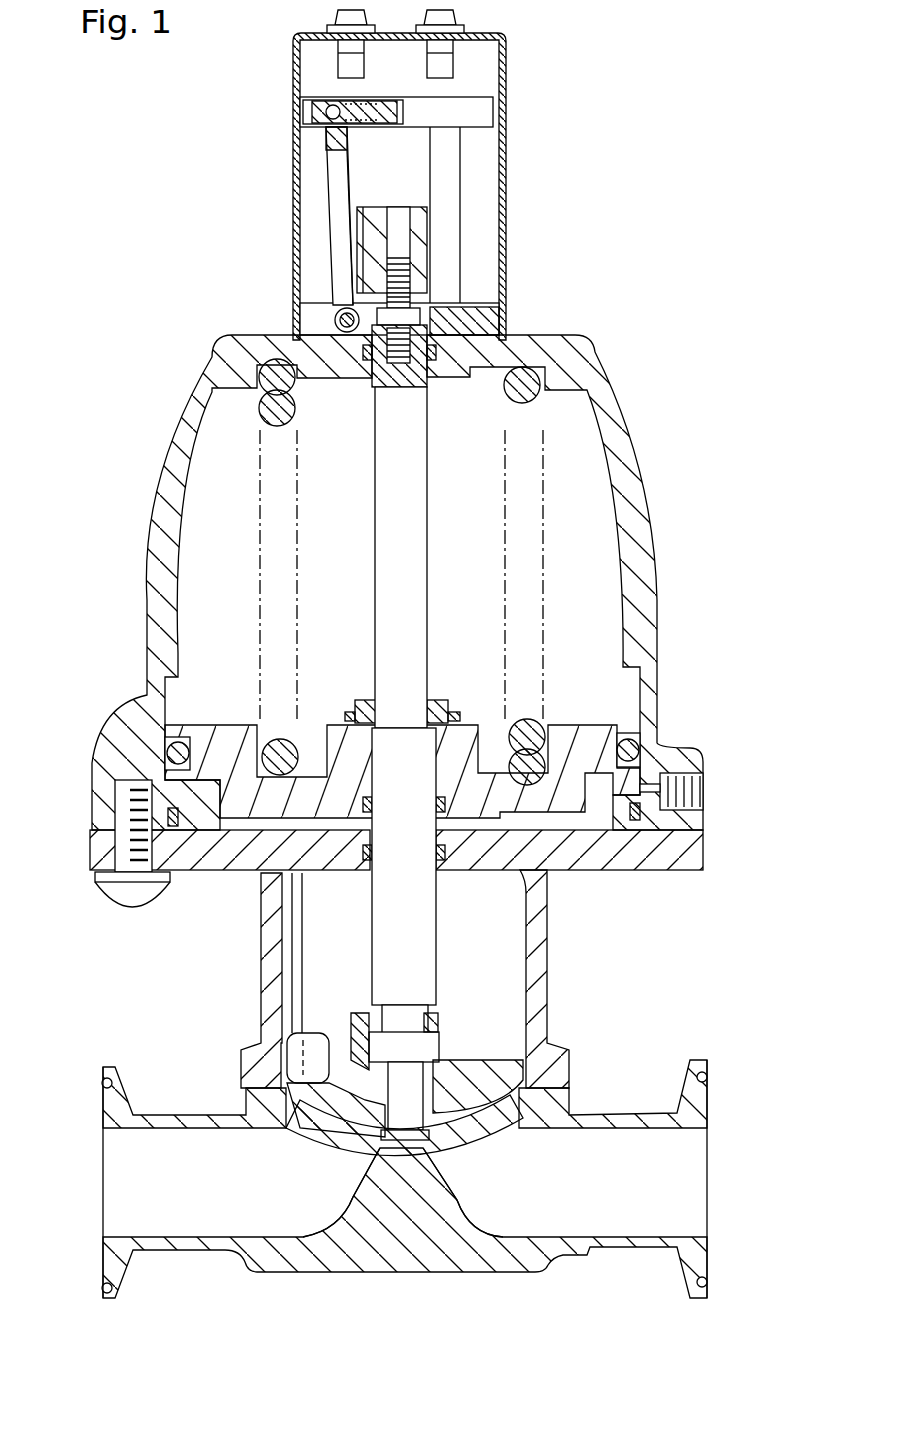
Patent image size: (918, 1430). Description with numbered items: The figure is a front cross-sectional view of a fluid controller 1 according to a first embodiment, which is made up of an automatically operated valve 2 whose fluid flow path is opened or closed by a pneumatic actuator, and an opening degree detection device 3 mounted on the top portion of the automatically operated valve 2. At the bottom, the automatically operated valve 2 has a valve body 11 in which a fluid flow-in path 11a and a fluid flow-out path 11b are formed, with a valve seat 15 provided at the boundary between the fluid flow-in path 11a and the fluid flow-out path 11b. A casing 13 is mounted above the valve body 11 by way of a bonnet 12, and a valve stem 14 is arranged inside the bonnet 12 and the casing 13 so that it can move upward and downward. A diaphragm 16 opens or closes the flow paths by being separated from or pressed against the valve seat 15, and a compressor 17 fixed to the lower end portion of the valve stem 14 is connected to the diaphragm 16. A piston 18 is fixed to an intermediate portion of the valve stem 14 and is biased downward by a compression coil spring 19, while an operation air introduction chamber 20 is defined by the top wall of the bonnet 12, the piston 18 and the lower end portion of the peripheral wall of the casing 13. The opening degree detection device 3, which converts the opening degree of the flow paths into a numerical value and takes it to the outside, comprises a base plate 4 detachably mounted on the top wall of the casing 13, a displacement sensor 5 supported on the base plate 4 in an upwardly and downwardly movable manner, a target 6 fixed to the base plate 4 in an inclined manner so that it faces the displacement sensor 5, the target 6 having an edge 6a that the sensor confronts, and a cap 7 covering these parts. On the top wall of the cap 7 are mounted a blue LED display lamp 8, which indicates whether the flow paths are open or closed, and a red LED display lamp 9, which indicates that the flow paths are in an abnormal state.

The fluid controller 1 is at (640, 244).
The automatically operated valve 2 is at (670, 577).
The opening degree detection device 3 is at (514, 140).
The base plate 4 is at (476, 306).
The displacement sensor 5 is at (362, 250).
The target 6 is at (340, 190).
The lever contact edge 6a is at (352, 200).
The cap 7 is at (293, 130).
The blue LED display lamp 8 is at (455, 17).
The red LED display lamp 9 is at (333, 19).
The valve body 11 is at (600, 1113).
The fluid flow-in path 11a is at (135, 1130).
The fluid flow-out path 11b is at (660, 1128).
The bonnet 12 is at (546, 961).
The casing 13 is at (648, 522).
The valve stem 14 is at (430, 915).
The valve seat 15 is at (430, 1180).
The diaphragm 16 is at (330, 1128).
The compressor 17 is at (482, 1065).
The piston 18 is at (596, 738).
The compression coil spring 19 is at (542, 438).
The operation air introduction chamber 20 is at (598, 820).